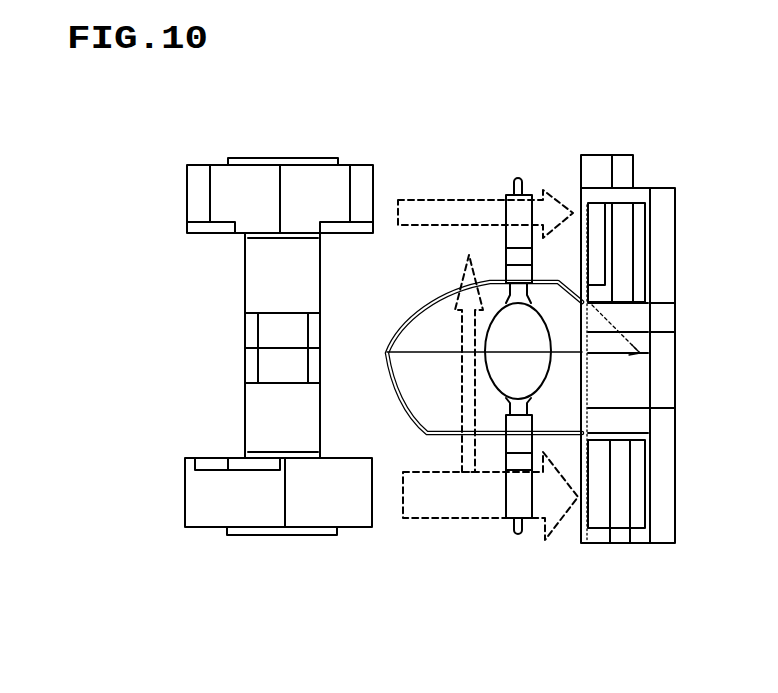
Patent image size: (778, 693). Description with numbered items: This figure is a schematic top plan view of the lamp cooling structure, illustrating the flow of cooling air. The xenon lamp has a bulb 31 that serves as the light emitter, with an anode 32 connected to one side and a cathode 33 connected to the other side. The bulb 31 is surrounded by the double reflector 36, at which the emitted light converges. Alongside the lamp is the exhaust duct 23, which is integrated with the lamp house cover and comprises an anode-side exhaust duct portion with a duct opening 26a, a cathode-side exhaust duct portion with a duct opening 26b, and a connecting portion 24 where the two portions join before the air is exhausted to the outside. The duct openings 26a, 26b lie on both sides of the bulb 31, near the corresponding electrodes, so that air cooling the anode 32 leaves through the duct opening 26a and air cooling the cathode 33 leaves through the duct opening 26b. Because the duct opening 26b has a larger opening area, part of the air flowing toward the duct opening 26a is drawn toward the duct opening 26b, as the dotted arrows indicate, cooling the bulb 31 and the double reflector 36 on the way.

The exhaust duct 23 is at (659, 373).
The connecting portion 24 is at (620, 367).
The duct opening on the anode side 26a is at (598, 493).
The duct opening on the cathode side 26b is at (597, 258).
The bulb 31 is at (543, 367).
The anode 32 is at (513, 500).
The cathode 33 is at (512, 215).
The double reflector 36 is at (400, 402).